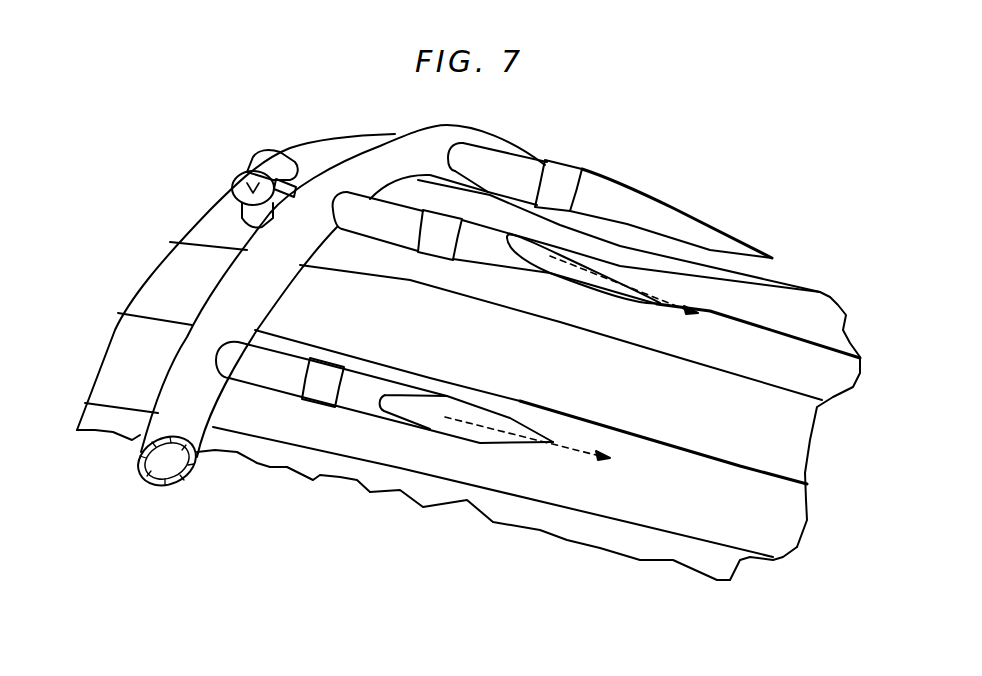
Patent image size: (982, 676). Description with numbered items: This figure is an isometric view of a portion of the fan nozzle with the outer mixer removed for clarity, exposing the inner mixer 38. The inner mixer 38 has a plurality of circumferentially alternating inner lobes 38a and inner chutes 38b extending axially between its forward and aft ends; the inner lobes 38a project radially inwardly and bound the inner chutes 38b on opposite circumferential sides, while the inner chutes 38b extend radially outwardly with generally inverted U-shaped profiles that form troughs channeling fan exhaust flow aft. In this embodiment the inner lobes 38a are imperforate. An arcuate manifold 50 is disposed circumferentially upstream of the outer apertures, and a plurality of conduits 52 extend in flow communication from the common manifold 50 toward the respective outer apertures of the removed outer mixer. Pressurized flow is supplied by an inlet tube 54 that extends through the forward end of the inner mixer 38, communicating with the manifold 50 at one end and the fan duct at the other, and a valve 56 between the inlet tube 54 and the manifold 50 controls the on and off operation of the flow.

The inner mixer 38 is at (313, 478).
The inner lobes 38a is at (726, 508).
The inner chutes 38b is at (812, 438).
The arcuate manifold 50 is at (274, 281).
The conduits 52 is at (482, 266).
The inlet tube 54 is at (241, 213).
The valve 56 is at (254, 153).